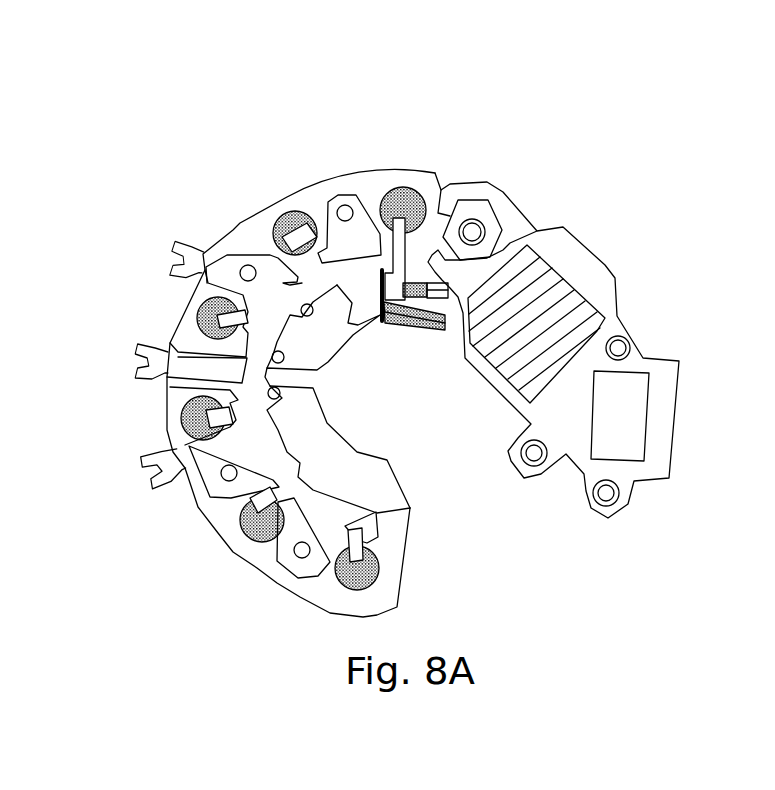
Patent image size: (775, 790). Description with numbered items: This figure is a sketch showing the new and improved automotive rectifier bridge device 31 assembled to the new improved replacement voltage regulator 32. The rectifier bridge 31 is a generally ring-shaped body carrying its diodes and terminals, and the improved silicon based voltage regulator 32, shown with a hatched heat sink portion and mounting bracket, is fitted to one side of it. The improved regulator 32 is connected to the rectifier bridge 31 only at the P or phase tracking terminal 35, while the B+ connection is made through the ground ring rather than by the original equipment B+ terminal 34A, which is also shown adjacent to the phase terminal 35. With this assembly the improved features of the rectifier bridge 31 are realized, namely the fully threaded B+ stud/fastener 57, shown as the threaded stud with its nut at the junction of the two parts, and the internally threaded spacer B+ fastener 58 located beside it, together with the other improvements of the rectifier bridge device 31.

The improved automotive rectifier bridge device 31 is at (283, 157).
The B+ fastener 58 is at (455, 222).
The B+ stud/fastener 57 is at (472, 220).
The P or phase tracking terminal 35 is at (452, 285).
The improved automotive silicon based voltage regulator 32 is at (566, 288).
The original equipment B+ terminal 34A is at (413, 318).